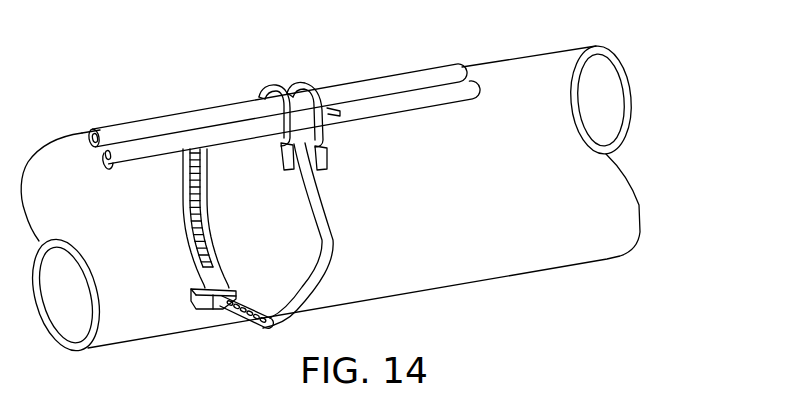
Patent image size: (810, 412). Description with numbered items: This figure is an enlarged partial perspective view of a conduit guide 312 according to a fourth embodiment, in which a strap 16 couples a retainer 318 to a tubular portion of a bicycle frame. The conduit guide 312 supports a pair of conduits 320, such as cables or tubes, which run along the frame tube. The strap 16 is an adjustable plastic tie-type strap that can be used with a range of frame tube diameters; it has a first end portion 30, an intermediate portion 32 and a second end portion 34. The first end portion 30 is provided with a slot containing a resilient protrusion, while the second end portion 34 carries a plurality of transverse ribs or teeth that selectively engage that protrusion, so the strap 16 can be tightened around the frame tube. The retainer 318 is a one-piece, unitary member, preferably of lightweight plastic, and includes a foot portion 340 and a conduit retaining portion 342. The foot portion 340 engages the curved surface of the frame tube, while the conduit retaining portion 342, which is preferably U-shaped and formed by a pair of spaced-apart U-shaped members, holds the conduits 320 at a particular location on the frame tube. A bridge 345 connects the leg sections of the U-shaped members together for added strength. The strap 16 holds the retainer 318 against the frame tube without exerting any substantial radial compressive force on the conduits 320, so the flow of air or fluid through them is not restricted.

The strap 16 is at (343, 214).
The first end portion 30 is at (229, 290).
The intermediate portion 32 is at (309, 206).
The second end portion 34 is at (246, 314).
The conduit guide 312 is at (324, 71).
The retainer 318 is at (270, 79).
The conduits 320 is at (440, 87).
The foot portion 340 is at (336, 151).
The conduit retaining portion 342 is at (345, 111).
The bridge 345 is at (282, 147).